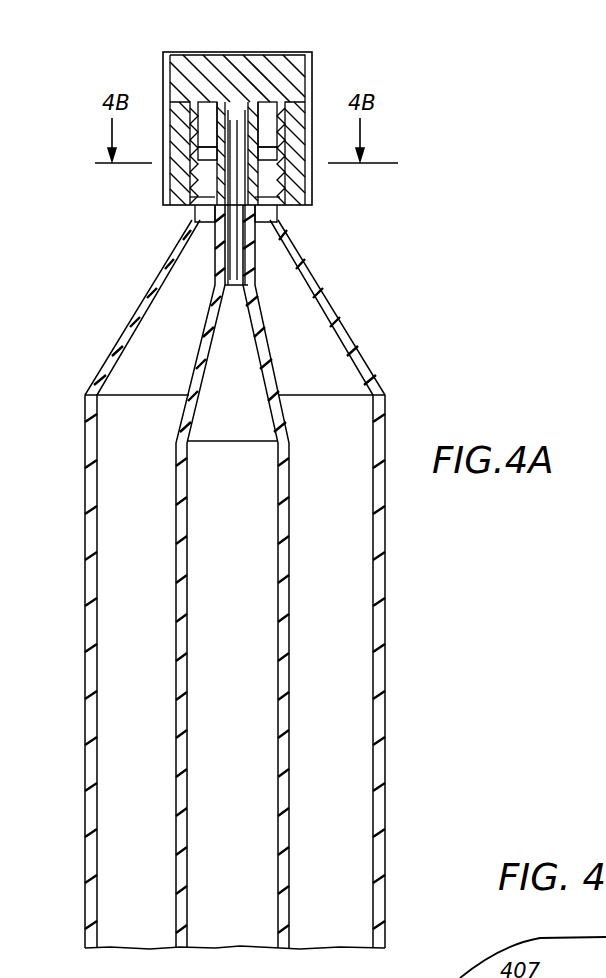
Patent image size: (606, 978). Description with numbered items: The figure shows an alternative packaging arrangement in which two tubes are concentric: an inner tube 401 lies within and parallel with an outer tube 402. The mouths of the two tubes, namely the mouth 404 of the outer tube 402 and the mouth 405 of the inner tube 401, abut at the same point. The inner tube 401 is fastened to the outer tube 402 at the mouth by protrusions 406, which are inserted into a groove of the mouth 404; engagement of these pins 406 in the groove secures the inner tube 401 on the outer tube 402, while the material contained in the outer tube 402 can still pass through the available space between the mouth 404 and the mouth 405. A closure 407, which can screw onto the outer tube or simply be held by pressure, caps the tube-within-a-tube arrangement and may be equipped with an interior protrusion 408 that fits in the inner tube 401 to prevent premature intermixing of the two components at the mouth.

The inner tube 401 is at (290, 782).
The outer tube 402 is at (385, 832).
The mouth of outer tube 404 is at (190, 200).
The mouth of inner tube 405 is at (287, 213).
The protrusion 406 is at (205, 168).
The closure 407 is at (163, 72).
The interior protrusion 408 is at (237, 120).